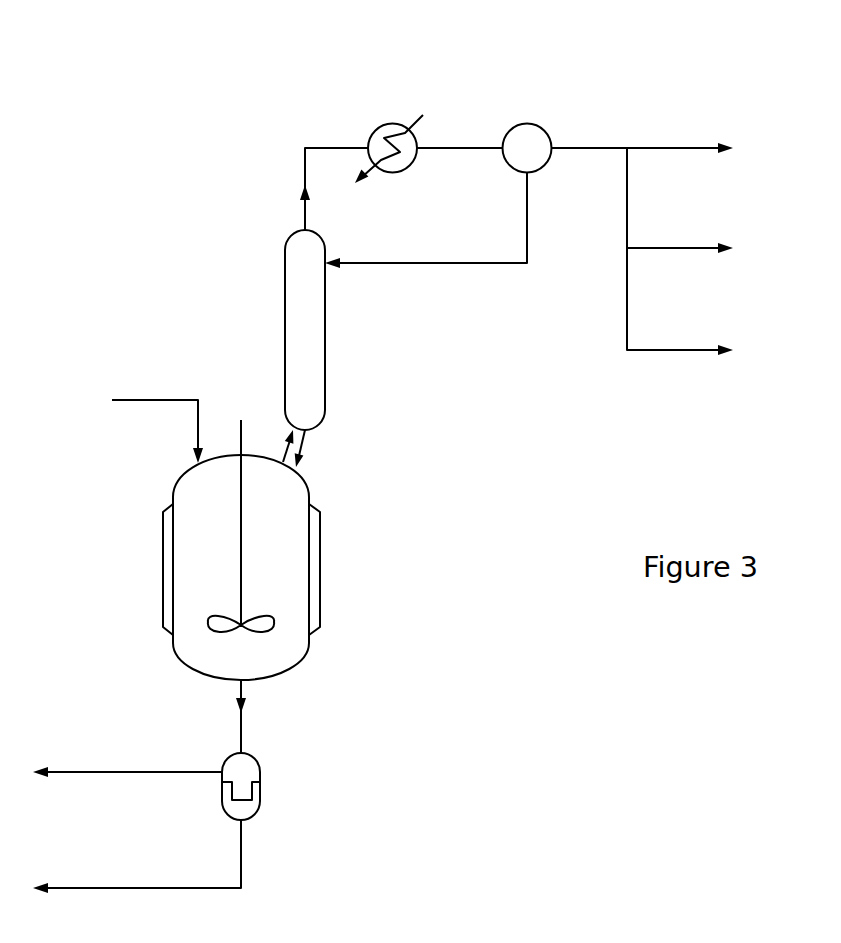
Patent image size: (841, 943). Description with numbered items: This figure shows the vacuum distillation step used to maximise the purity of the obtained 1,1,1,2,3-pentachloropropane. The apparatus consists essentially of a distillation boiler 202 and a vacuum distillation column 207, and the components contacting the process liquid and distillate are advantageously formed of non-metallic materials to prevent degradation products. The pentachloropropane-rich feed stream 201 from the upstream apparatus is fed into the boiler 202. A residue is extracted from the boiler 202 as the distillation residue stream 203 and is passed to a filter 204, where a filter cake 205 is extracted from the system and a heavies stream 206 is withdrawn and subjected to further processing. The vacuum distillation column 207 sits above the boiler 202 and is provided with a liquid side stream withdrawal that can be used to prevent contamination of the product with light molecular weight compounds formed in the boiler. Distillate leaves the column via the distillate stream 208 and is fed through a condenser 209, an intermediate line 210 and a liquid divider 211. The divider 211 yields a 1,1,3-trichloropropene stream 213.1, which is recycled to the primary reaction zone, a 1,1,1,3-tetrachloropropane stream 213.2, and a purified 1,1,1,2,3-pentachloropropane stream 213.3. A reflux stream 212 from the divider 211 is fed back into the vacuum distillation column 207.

The 1,1,1,2,3-pentachloropropane-rich feed stream 201 is at (172, 395).
The distillation boiler 202 is at (300, 667).
The distillation residue stream 203 is at (235, 730).
The filter 204 is at (273, 787).
The filter cake 205 is at (118, 767).
The heavies stream 206 is at (118, 882).
The vacuum distillation column 207 is at (333, 367).
The distillate stream 208 is at (298, 168).
The condenser 209 is at (370, 125).
The intermediate line 210 is at (467, 157).
The liquid divider 211 is at (510, 120).
The reflux stream 212 is at (437, 270).
The 1,1,3-trichloropropene stream 213.1 is at (690, 153).
The 1,1,1,3-tetrachloropropane stream 213.2 is at (690, 253).
The purified 1,1,1,2,3-pentachloropropane stream 213.3 is at (690, 355).